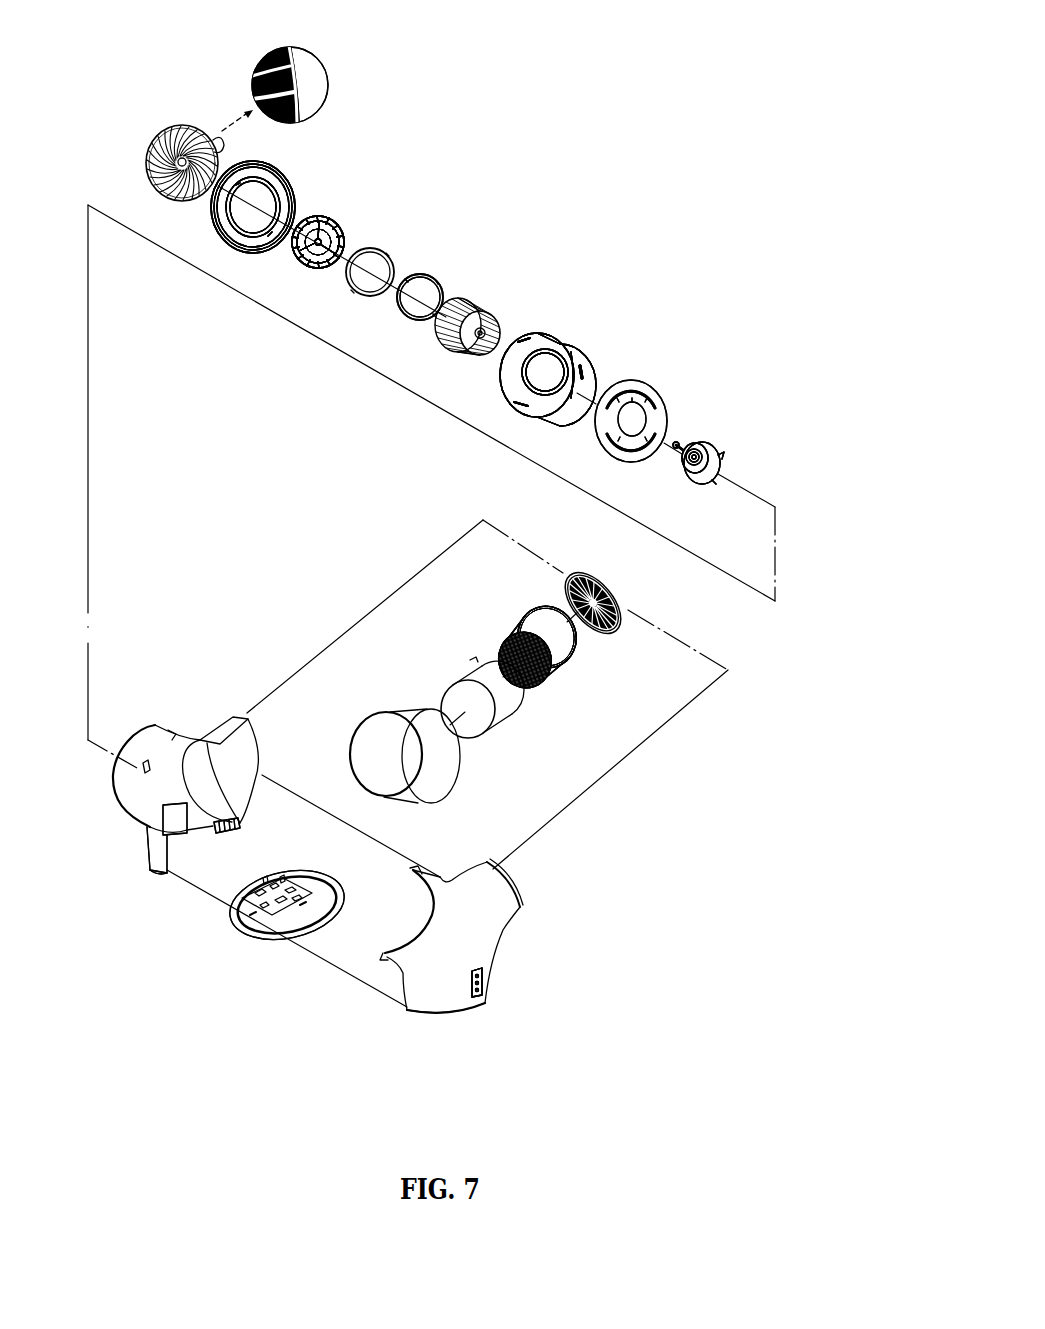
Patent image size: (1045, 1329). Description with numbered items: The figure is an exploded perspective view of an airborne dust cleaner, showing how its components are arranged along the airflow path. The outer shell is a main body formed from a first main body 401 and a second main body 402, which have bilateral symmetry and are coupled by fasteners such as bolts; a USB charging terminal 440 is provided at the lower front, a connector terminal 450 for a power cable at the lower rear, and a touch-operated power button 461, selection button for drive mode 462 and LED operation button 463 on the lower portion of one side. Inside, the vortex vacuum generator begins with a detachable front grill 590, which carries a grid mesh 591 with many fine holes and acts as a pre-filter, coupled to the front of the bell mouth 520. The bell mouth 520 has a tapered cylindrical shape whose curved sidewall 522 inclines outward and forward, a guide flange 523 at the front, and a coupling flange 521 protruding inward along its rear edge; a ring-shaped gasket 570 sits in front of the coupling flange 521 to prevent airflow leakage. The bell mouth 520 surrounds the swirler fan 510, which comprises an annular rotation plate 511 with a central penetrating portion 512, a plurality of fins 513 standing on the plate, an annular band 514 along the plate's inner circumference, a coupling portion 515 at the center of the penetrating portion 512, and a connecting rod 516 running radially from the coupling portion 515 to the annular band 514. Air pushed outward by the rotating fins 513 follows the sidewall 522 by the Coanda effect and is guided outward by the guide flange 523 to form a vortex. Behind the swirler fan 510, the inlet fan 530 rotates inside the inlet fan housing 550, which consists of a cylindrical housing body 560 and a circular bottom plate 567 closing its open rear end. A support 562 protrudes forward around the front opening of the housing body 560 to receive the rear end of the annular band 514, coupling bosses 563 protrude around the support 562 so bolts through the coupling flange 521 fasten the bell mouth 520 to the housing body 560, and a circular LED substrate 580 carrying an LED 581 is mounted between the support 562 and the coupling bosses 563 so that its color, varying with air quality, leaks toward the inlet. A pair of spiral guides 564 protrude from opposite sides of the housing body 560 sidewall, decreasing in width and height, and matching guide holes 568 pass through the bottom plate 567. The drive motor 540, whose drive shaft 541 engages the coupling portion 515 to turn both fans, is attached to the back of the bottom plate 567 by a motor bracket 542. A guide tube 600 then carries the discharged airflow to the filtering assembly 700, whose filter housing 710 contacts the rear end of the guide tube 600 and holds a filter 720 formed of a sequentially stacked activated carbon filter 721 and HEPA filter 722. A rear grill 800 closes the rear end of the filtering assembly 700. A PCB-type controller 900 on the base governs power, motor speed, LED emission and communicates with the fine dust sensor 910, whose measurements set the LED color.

The first main body 401 is at (152, 716).
The second main body 402 is at (512, 936).
The USB charging terminal 440 is at (265, 920).
The connector terminal 450 is at (240, 826).
The power button 461 is at (485, 977).
The selection button for drive mode 462 is at (490, 987).
The LED operation button 463 is at (477, 1003).
The swirler fan 510 is at (350, 212).
The annular rotation plate 511 is at (344, 228).
The penetrating portion 512 is at (336, 220).
The fins 513 is at (328, 265).
The annular band 514 is at (303, 258).
The coupling portion 515 is at (311, 262).
The connecting rod 516 is at (322, 215).
The bell mouth 520 is at (242, 258).
The coupling flange 521 is at (234, 226).
The sidewall 522 is at (215, 212).
The guide flange 523 is at (232, 240).
The inlet fan 530 is at (451, 370).
The drive motor 540 is at (720, 452).
The drive shaft 541 is at (680, 447).
The motor bracket 542 is at (690, 485).
The inlet fan housing 550 is at (648, 332).
The housing body 560 is at (580, 353).
The support 562 is at (514, 388).
The coupling bosses 563 is at (545, 396).
The guides 564 is at (530, 403).
The bottom plate 567 is at (640, 382).
The guide holes 568 is at (620, 460).
The gasket 570 is at (393, 258).
The LED substrate 580 is at (418, 322).
The LED 581 is at (442, 282).
The front grill 590 is at (262, 62).
The grid mesh 591 is at (306, 83).
The guide tube 600 is at (437, 760).
The filtering assembly 700 is at (490, 607).
The filter housing 710 is at (500, 707).
The filter 720 is at (705, 790).
The activated carbon filter 721 is at (566, 669).
The high-efficiency particulate air (HEPA) filter 722 is at (572, 650).
The rear grill 800 is at (622, 622).
The controller 900 is at (283, 876).
The fine dust sensor 910 is at (190, 832).